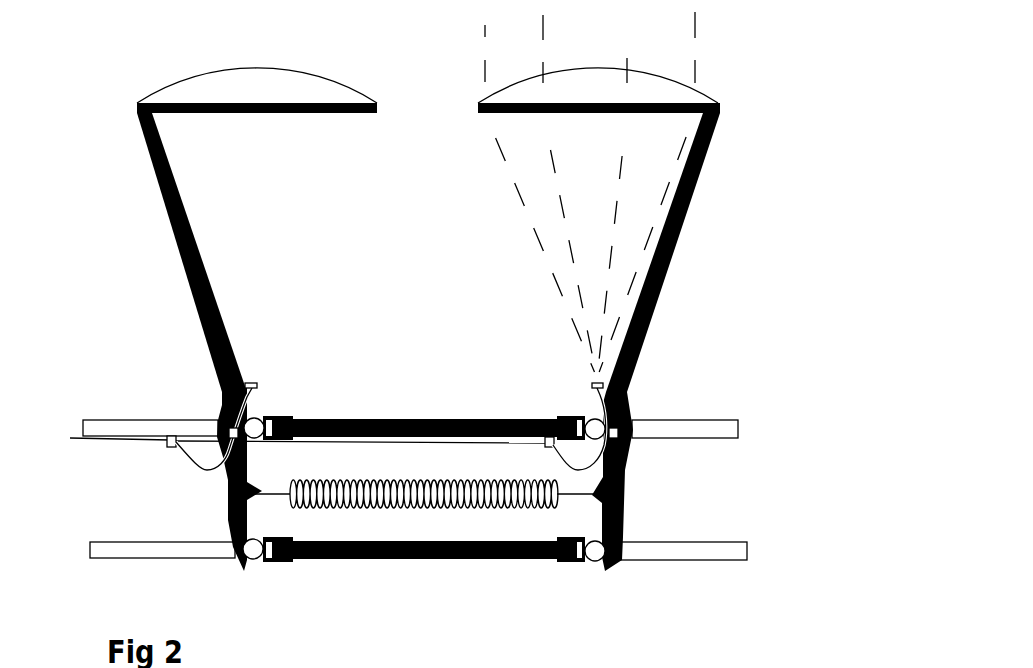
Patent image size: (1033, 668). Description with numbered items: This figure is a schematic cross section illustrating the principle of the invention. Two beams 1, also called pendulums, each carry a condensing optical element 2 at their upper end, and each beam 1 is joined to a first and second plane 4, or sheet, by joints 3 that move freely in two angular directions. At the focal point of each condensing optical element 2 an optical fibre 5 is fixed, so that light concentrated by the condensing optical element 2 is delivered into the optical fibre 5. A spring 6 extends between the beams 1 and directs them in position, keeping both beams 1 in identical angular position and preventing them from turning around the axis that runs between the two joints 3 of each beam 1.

The beam 1 is at (187, 273).
The condensing optical element 2 is at (295, 72).
The joint 3 is at (258, 563).
The plane 4 is at (190, 420).
The optical fibre 5 is at (253, 393).
The spring 6 is at (397, 497).